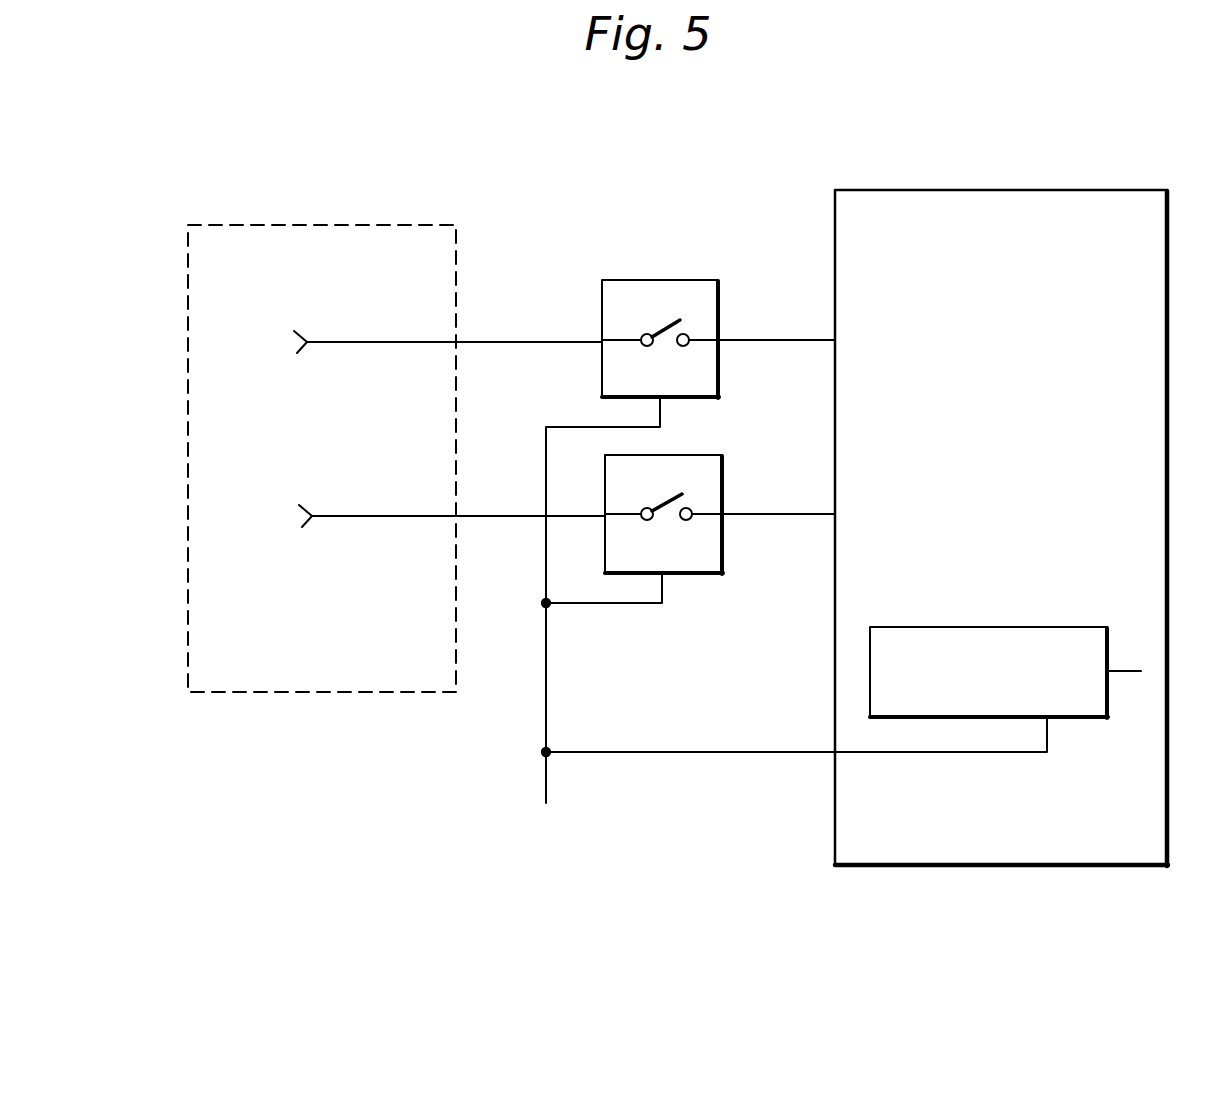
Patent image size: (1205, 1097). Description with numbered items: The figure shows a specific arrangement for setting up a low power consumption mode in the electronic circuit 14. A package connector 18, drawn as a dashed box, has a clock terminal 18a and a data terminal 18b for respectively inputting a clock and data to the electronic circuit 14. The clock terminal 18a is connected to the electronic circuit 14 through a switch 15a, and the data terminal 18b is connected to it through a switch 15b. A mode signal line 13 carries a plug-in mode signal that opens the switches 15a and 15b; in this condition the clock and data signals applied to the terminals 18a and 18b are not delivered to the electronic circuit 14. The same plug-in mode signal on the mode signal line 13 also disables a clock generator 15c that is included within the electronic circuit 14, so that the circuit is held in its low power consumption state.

The mode signal line 13 is at (546, 781).
The electronic circuit 14 is at (1057, 190).
The switch 15a is at (682, 281).
The switch 15b is at (710, 456).
The clock generator 15c is at (975, 627).
The package connector 18 is at (352, 223).
The clock terminal 18a is at (298, 355).
The data terminal 18b is at (303, 529).